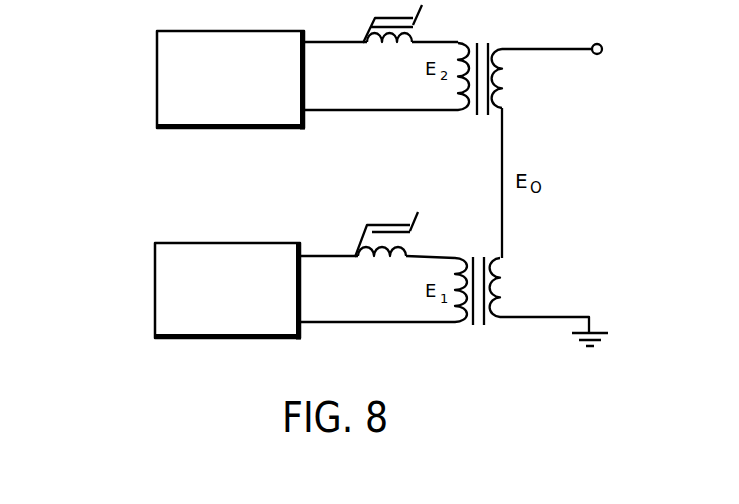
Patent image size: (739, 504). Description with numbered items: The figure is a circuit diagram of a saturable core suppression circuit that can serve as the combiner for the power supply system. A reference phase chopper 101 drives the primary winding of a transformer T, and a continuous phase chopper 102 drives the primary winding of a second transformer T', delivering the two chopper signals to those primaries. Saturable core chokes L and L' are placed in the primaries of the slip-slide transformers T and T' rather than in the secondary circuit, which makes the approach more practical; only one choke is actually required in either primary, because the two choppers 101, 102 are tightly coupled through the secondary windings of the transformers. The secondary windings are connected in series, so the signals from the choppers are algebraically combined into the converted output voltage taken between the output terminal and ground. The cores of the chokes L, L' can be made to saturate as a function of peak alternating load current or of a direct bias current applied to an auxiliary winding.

The reference phase chopper 101 is at (157, 66).
The continuous phase chopper 102 is at (156, 293).
The saturable core choke L is at (392, 36).
The transformer T is at (480, 66).
The saturable core choke L' is at (386, 246).
The transformer T' is at (477, 279).